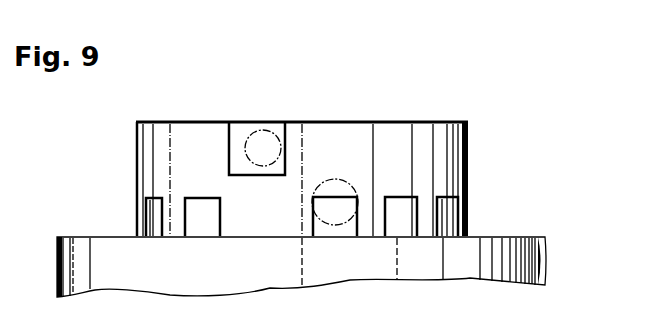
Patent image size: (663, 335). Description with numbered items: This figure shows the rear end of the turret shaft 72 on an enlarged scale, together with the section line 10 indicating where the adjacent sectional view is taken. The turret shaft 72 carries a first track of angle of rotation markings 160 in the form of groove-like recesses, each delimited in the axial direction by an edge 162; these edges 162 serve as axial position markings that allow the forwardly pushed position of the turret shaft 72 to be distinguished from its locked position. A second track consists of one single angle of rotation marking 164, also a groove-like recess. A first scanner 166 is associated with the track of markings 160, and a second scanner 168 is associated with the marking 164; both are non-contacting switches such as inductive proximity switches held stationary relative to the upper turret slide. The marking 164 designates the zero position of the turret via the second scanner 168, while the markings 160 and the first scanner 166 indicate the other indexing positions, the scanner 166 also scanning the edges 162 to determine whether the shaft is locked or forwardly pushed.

The section line 10- 10 is at (115, 218).
The turret shaft 72 is at (540, 265).
The angle of rotation markings 160 is at (207, 228).
The edge 162 is at (203, 205).
The angle of rotation marking 164 is at (240, 130).
The first scanner 166 is at (340, 180).
The second scanner 168 is at (265, 142).